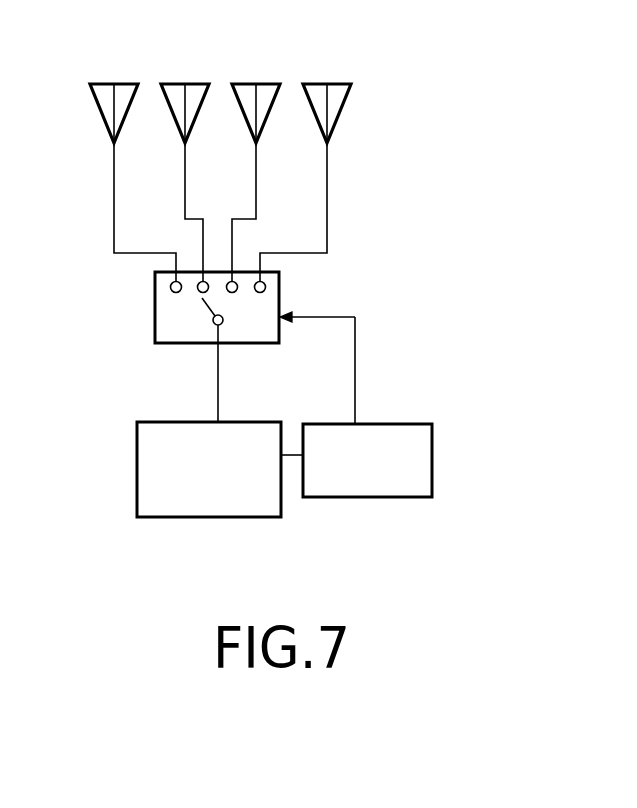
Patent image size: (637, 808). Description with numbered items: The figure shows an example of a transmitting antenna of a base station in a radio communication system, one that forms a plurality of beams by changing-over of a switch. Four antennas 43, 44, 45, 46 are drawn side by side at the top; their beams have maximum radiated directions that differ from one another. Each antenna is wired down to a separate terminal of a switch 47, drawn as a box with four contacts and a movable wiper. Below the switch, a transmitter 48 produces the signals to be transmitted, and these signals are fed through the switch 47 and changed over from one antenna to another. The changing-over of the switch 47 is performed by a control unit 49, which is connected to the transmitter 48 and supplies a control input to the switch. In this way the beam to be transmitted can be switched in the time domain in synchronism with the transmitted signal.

The antenna 43 is at (118, 84).
The antenna 44 is at (189, 84).
The antenna 45 is at (260, 84).
The antenna 46 is at (332, 84).
The switch 47 is at (282, 283).
The transmitter 48 is at (137, 467).
The control unit 49 is at (432, 467).